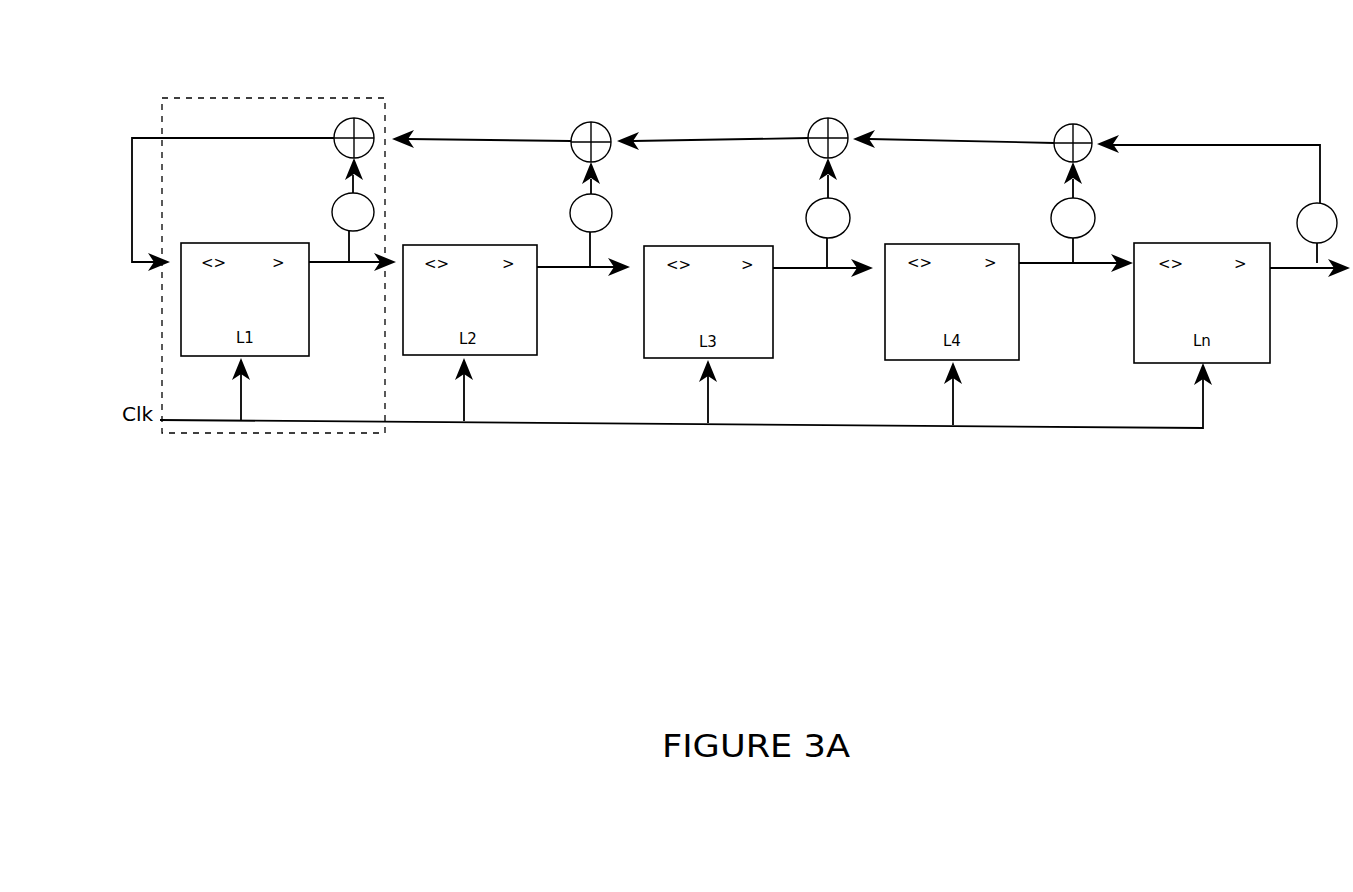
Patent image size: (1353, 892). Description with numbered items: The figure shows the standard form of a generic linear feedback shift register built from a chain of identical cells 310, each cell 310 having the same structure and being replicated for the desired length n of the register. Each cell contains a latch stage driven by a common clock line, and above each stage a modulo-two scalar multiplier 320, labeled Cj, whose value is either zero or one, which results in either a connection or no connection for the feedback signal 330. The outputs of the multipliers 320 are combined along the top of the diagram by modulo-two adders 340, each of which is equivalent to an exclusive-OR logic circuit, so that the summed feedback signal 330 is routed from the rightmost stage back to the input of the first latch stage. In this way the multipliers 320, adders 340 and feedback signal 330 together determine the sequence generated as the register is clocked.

The cell 310 is at (317, 90).
The modulo-2 scalar multiplier 320 is at (563, 198).
The feedback signal 330 is at (193, 143).
The modulo-2 adder 340 is at (837, 107).